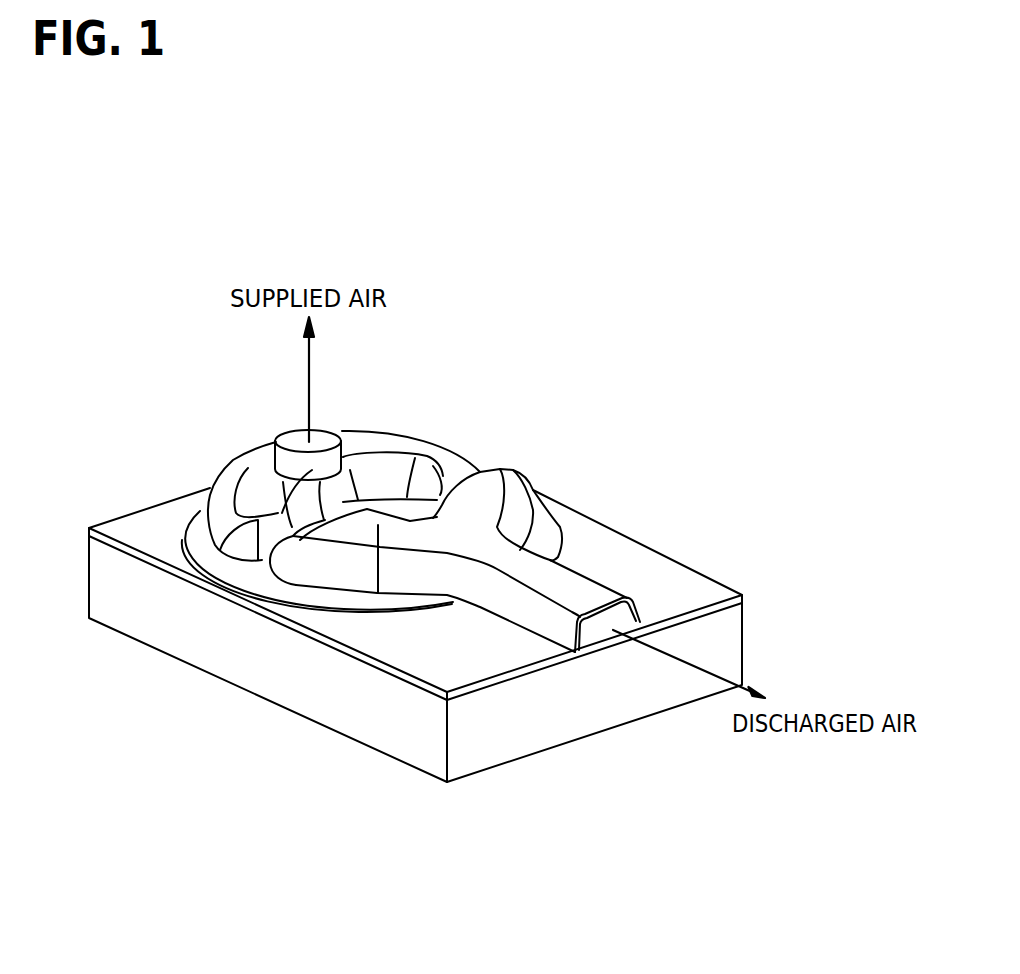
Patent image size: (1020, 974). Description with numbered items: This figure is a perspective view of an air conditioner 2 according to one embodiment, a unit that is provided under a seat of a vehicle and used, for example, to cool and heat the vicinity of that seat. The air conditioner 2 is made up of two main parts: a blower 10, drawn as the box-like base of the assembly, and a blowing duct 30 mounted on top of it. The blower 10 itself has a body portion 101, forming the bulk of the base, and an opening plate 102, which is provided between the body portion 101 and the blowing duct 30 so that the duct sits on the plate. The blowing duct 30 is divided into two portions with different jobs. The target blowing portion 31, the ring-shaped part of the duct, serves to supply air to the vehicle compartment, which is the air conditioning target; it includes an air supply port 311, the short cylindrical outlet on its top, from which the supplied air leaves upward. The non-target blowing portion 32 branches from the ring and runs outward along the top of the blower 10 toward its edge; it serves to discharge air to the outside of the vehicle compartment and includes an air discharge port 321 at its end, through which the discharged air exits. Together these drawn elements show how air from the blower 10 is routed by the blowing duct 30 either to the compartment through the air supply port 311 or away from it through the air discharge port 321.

The air conditioner 2 is at (658, 312).
The blower 10 is at (471, 659).
The body portion 101 is at (503, 753).
The opening plate 102 is at (673, 575).
The blowing duct 30 is at (414, 559).
The target blowing portion 31 is at (402, 440).
The air supply port 311 is at (289, 442).
The non-target blowing portion 32 is at (517, 482).
The air discharge port 321 is at (592, 635).